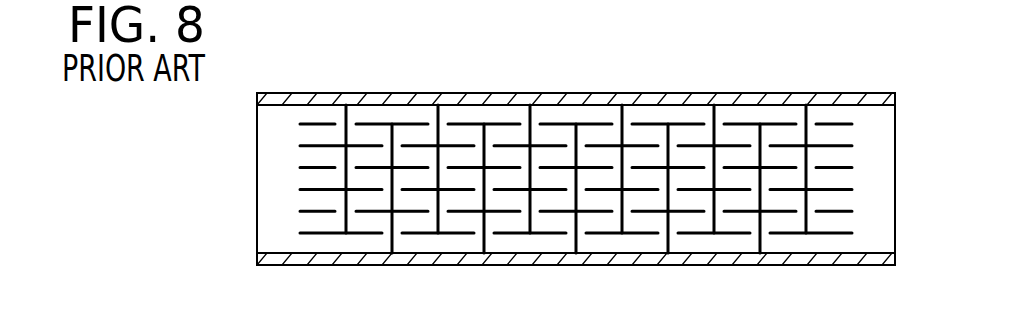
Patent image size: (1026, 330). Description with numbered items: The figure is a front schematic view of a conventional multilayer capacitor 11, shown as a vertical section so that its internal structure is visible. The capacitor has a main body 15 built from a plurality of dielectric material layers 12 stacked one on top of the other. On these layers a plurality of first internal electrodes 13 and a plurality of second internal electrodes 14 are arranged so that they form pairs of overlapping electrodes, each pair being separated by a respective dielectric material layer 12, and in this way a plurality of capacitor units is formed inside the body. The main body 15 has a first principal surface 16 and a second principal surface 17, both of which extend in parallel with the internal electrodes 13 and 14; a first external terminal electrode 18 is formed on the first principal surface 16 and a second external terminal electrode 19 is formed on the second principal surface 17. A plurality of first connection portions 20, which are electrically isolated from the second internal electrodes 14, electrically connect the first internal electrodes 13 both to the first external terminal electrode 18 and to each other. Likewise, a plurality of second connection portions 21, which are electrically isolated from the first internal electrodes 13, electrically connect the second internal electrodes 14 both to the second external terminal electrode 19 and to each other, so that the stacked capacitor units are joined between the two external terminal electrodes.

The multilayer capacitor 11 is at (292, 54).
The dielectric material layers 12 is at (548, 160).
The first internal electrodes 13 is at (458, 214).
The second internal electrodes 14 is at (683, 167).
The main body 15 is at (896, 158).
The first principal surface 16 is at (272, 106).
The second principal surface 17 is at (273, 253).
The first external terminal electrode 18 is at (471, 94).
The second external terminal electrode 19 is at (517, 265).
The first connection portions 20 is at (438, 112).
The second connection portions 21 is at (667, 245).